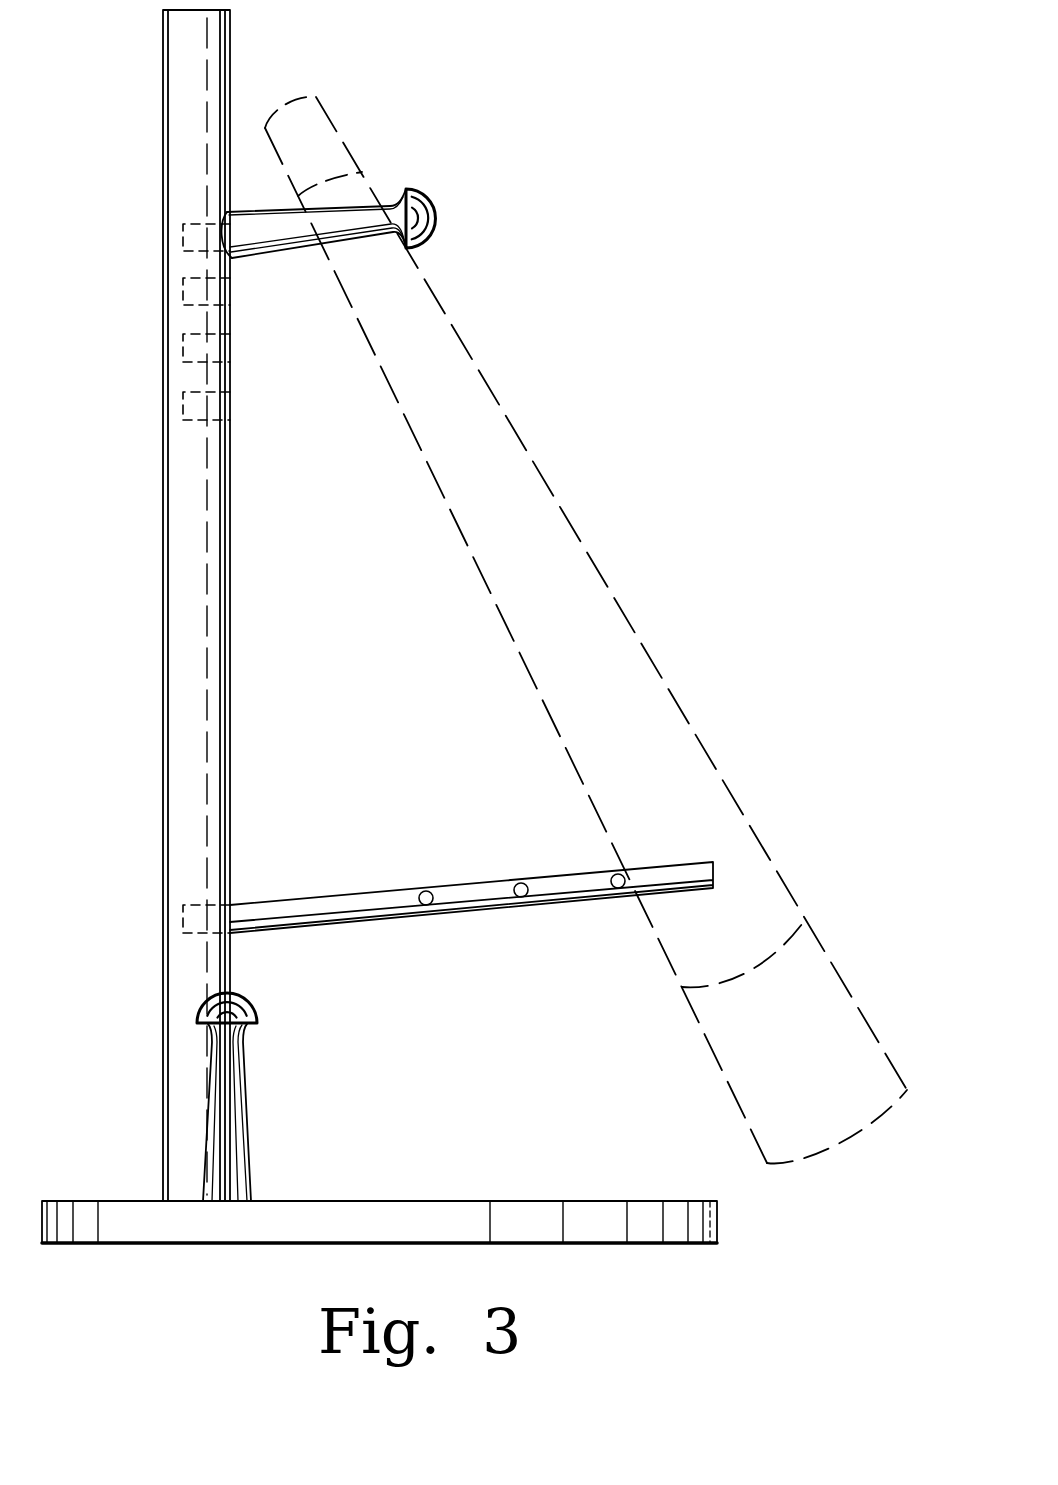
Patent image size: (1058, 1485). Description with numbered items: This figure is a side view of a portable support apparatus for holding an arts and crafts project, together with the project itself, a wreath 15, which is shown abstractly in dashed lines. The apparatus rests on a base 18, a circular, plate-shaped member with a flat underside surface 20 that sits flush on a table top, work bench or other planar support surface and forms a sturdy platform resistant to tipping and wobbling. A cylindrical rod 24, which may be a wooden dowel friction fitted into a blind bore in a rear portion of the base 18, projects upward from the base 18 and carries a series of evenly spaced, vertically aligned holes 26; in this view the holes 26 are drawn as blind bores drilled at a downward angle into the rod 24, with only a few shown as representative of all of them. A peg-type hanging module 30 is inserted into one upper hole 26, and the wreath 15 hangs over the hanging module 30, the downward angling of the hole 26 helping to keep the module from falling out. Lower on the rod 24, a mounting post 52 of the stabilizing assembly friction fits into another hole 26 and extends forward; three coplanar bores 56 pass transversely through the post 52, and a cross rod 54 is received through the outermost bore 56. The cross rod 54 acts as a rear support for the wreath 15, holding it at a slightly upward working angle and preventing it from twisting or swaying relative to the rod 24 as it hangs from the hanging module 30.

The wreath 15 is at (571, 527).
The base 18 is at (710, 1221).
The underside surface 20 is at (643, 1247).
The cylindrical rod 24 is at (185, 775).
The holes 26 is at (183, 292).
The hanging module 30 is at (440, 182).
The mounting post 52 is at (335, 895).
The cross rod 54 is at (618, 888).
The bores 56 is at (428, 891).